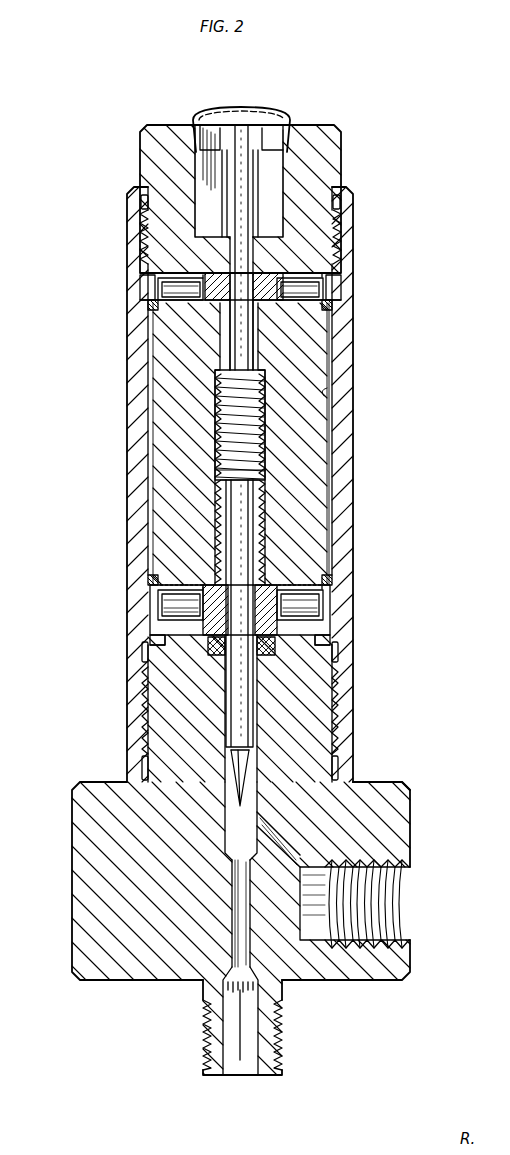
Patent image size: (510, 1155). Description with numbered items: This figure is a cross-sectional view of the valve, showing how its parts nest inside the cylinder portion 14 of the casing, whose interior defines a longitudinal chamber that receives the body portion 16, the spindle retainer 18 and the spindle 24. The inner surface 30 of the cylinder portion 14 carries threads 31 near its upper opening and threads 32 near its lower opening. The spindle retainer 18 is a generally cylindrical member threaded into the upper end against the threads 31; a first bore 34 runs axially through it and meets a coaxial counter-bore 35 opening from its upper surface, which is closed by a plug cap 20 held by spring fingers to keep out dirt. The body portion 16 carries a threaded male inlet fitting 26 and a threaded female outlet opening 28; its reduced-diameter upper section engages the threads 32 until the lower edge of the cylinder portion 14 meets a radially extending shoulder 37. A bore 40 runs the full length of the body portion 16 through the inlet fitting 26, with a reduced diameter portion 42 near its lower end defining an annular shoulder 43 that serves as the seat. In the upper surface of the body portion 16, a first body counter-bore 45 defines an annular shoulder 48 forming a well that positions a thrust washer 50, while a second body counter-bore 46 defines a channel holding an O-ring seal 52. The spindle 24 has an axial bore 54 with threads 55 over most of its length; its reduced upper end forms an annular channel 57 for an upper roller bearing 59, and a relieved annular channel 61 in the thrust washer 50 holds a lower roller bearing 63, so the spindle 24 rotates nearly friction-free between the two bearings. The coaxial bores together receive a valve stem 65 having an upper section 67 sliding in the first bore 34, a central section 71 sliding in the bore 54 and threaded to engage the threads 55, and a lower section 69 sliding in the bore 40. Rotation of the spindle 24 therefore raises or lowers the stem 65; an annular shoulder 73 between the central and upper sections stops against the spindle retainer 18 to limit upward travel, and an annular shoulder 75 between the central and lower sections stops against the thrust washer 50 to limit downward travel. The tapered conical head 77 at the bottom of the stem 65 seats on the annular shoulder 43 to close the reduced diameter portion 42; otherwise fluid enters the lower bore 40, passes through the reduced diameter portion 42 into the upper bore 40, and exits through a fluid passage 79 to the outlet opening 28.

The cylinder portion 14 is at (148, 388).
The body portion 16 is at (85, 895).
The spindle retainer 18 is at (153, 140).
The plug cap 20 is at (218, 108).
The spindle 24 is at (168, 420).
The threaded male inlet fitting 26 is at (206, 1048).
The threaded female outlet opening 28 is at (398, 878).
The inner surface 30 is at (326, 396).
The threads 31 is at (338, 248).
The threads 32 is at (336, 722).
The first bore 34 is at (231, 242).
The counter-bore 35 is at (278, 178).
The radially extending shoulder 37 is at (374, 782).
The bore 40 is at (228, 828).
The reduced diameter portion 42 is at (237, 935).
The annular shoulder 43 is at (251, 872).
The first body counter-bore 45 is at (200, 640).
The second body counter-bore 46 is at (263, 656).
The annular shoulder 48 is at (152, 633).
The thrust washer 50 is at (323, 648).
The O-ring seal 52 is at (216, 657).
The bore 54 is at (225, 346).
The threads 55 is at (258, 555).
The annular channel 57 is at (305, 296).
The upper roller bearing 59 is at (163, 285).
The annular channel 61 is at (303, 612).
The lower roller bearing 63 is at (165, 605).
The valve stem 65 is at (262, 492).
The upper section 67 is at (243, 178).
The lower section 69 is at (252, 740).
The central section 71 is at (247, 340).
The annular shoulder 73 is at (254, 267).
The annular shoulder 75 is at (222, 482).
The conical head 77 is at (235, 758).
The fluid passage 79 is at (290, 860).